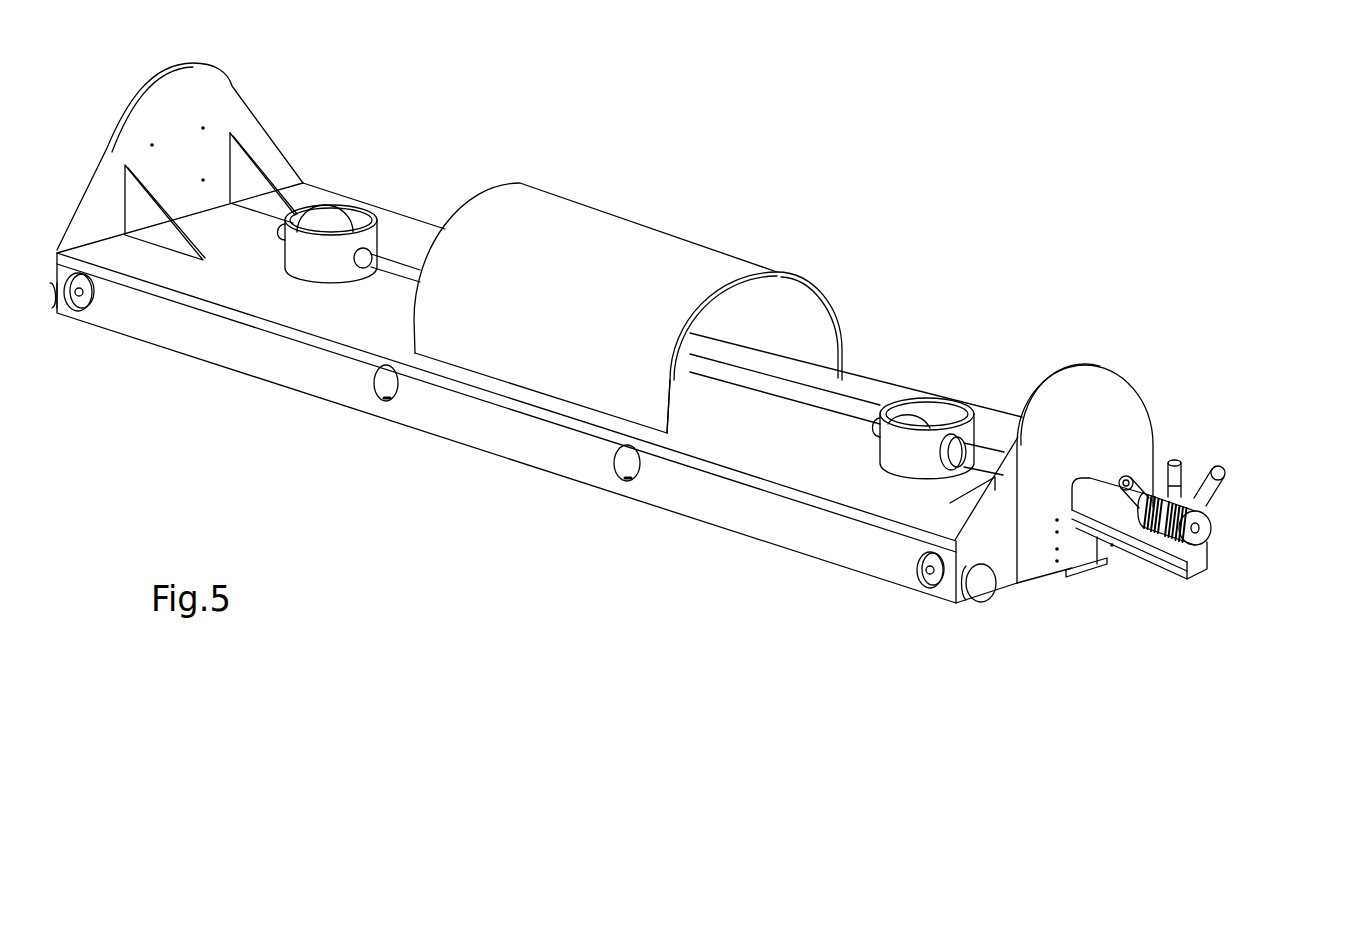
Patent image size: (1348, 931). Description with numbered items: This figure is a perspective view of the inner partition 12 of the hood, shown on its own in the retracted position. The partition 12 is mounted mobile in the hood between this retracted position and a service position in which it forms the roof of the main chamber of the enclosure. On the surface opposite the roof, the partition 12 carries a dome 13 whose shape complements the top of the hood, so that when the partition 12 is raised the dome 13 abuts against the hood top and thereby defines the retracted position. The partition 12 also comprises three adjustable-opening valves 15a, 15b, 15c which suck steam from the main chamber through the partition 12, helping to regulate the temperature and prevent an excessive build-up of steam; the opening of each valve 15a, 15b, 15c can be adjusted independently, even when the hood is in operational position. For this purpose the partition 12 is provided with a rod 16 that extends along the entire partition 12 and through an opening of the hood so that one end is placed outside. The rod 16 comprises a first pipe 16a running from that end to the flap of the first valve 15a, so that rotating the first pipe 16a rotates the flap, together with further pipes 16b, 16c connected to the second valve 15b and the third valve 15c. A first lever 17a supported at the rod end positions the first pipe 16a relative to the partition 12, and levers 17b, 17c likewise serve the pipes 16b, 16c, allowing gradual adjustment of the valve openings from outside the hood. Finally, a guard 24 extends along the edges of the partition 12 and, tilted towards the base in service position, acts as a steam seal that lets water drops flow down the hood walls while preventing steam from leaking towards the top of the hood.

The inner partition 12 is at (852, 192).
The dome 13 is at (580, 233).
The first valve 15a is at (335, 262).
The second valve 15b is at (677, 380).
The third valve 15c is at (900, 452).
The rod 16 is at (1218, 522).
The first pipe 16a is at (982, 452).
The second pipe 16b is at (823, 410).
The third pipe 16c is at (391, 257).
The first lever 17a is at (1140, 490).
The second lever 17b is at (1175, 470).
The third lever 17c is at (1220, 476).
The guard 24 is at (57, 302).